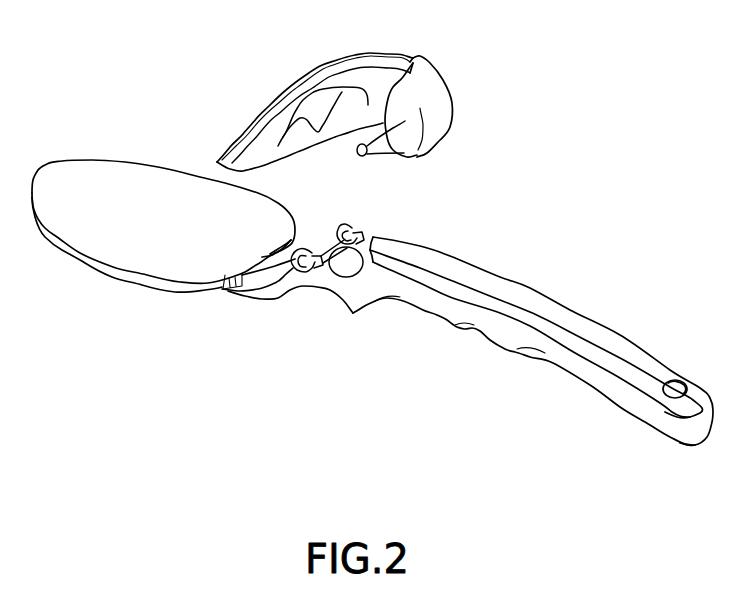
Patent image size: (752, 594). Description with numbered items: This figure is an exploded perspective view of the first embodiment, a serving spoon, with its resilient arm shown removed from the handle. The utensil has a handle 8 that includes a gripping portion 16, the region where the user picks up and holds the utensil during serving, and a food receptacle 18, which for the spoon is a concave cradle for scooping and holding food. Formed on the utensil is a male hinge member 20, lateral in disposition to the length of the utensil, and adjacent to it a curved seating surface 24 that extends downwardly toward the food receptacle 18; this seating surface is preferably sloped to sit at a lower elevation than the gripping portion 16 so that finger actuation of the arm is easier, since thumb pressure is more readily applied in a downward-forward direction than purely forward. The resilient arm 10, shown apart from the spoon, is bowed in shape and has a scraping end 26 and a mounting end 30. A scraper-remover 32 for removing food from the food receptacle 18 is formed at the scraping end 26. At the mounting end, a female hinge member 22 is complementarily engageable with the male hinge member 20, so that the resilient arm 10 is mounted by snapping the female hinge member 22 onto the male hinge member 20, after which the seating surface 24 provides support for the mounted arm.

The handle 8 is at (489, 344).
The resilient arm 10 is at (453, 62).
The gripping portion 16 is at (440, 304).
The food receptacle 18 is at (97, 185).
The male hinge member 20 is at (368, 154).
The female hinge member 22 is at (353, 225).
The curved seating surface 24 is at (345, 267).
The scraping end 26 is at (311, 118).
The mounting end 30 is at (386, 125).
The scraper-remover 32 is at (240, 130).